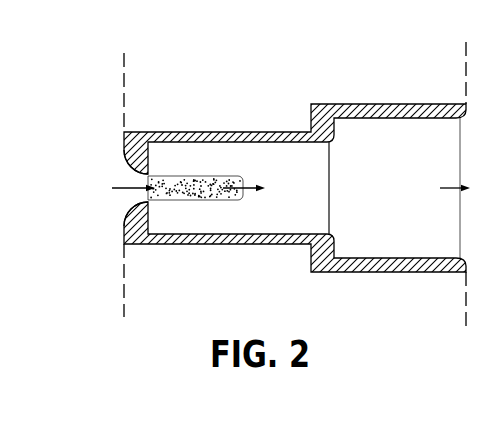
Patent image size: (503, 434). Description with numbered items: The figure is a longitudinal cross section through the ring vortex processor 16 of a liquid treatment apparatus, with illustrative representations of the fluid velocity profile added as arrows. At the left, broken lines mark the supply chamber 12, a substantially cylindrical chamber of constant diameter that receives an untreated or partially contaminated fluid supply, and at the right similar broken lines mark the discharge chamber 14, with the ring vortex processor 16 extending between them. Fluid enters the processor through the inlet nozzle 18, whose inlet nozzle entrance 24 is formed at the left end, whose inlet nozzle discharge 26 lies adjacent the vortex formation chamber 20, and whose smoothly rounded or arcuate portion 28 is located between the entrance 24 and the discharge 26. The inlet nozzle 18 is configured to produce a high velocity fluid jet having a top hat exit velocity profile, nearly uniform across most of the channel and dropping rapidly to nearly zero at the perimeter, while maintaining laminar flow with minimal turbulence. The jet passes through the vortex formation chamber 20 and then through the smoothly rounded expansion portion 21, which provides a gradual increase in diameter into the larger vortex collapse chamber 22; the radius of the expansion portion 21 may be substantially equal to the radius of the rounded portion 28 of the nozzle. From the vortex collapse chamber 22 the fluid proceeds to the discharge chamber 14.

The supply chamber 12 is at (124, 88).
The discharge chamber 14 is at (466, 70).
The ring vortex processor 16 is at (331, 100).
The inlet nozzle 18 is at (117, 175).
The vortex formation chamber 20 is at (255, 216).
The expansion portion 21 is at (332, 180).
The vortex collapse chamber 22 is at (385, 228).
The inlet nozzle entrance 24 is at (128, 222).
The inlet nozzle discharge 26 is at (160, 182).
The smoothly rounded portion 28 is at (145, 172).